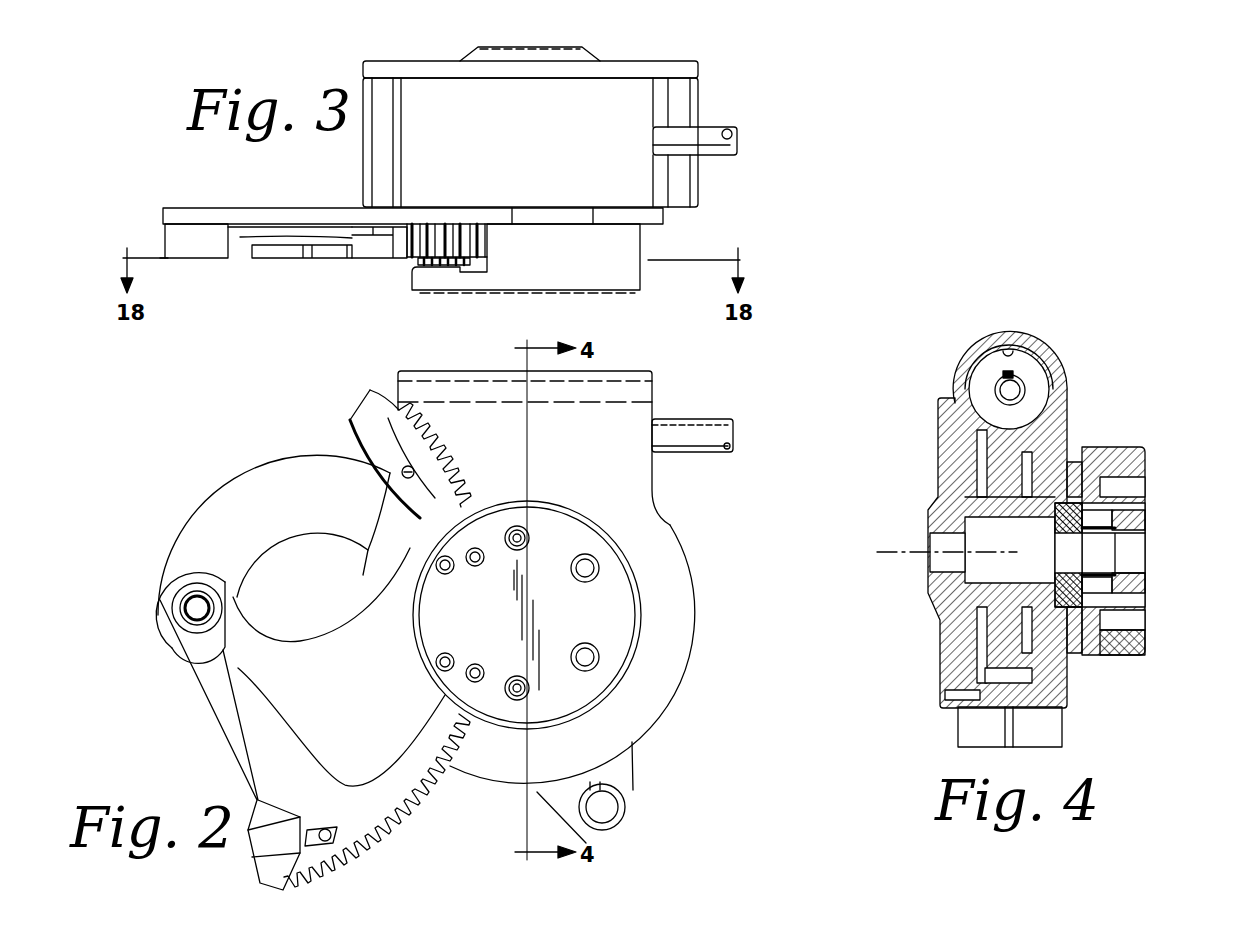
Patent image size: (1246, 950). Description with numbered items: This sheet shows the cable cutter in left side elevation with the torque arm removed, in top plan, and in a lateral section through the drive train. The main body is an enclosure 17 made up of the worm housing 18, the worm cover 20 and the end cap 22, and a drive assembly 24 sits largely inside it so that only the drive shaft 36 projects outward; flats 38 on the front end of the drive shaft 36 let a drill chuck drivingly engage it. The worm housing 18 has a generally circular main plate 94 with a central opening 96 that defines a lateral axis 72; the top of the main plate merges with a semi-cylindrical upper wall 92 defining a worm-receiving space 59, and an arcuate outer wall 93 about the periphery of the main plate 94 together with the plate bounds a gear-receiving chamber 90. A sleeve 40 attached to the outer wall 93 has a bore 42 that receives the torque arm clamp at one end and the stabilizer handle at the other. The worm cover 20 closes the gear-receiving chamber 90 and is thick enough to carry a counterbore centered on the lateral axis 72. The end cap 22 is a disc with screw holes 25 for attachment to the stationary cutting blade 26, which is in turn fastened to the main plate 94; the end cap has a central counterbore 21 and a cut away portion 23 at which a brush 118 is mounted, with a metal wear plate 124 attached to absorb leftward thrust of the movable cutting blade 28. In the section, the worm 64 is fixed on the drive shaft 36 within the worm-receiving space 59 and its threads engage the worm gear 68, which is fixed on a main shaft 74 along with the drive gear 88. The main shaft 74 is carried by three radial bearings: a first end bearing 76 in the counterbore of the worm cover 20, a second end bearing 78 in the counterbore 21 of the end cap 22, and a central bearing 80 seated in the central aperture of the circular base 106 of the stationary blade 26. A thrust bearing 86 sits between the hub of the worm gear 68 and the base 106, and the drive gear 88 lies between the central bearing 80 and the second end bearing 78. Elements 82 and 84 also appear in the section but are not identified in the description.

In FIG. 3, the enclosure 17 is at (700, 63).
In FIG. 2, the enclosure 17 is at (429, 368).
In FIG. 3, the worm housing 18 is at (638, 117).
In FIG. 2, the worm housing 18 is at (668, 650).
In FIG. 4, the worm housing 18 is at (1062, 385).
In FIG. 3, the worm cover 20 is at (640, 68).
In FIG. 4, the worm cover 20 is at (937, 403).
In FIG. 4, the central counterbore 21 is at (1147, 480).
In FIG. 3, the end cap 22 is at (637, 266).
In FIG. 2, the end cap 22 is at (620, 603).
In FIG. 4, the end cap 22 is at (1145, 455).
In FIG. 3, the cut away portion 23 is at (443, 278).
In FIG. 3, the drive assembly 24 is at (666, 207).
In FIG. 2, the drive assembly 24 is at (683, 418).
In FIG. 2, the screw holes 25 is at (530, 537).
In FIG. 3, the stationary cutting blade 26 is at (186, 206).
In FIG. 2, the stationary cutting blade 26 is at (250, 462).
In FIG. 3, the movable cutting blade 28 is at (273, 257).
In FIG. 2, the movable cutting blade 28 is at (193, 689).
In FIG. 2, the drive shaft 36 is at (733, 436).
In FIG. 3, the flats 38 is at (728, 152).
In FIG. 2, the flats 38 is at (712, 419).
In FIG. 2, the sleeve 40 is at (628, 807).
In FIG. 4, the sleeve 40 is at (955, 732).
In FIG. 2, the bore 42 is at (617, 820).
In FIG. 4, the worm-receiving space 59 is at (1003, 350).
In FIG. 4, the worm 64 is at (1025, 368).
In FIG. 4, the worm gear 68 is at (977, 460).
In FIG. 4, the lateral axis 72 is at (880, 548).
In FIG. 4, the main shaft 74 is at (940, 625).
In FIG. 4, the first end bearing 76 is at (935, 590).
In FIG. 4, the second end bearing 78 is at (1145, 605).
In FIG. 4, the central bearing 80 is at (1110, 655).
In FIG. 4, the bore 82 is at (943, 542).
In FIG. 4, the screw 84 is at (1145, 552).
In FIG. 4, the thrust bearing 86 is at (1060, 605).
In FIG. 4, the drive gear 88 is at (1125, 447).
In FIG. 4, the gear-receiving chamber 90 is at (977, 432).
In FIG. 3, the upper wall 92 is at (443, 100).
In FIG. 2, the upper wall 92 is at (638, 372).
In FIG. 4, the upper wall 92 is at (955, 392).
In FIG. 3, the outer wall 93 is at (382, 174).
In FIG. 4, the outer wall 93 is at (975, 660).
In FIG. 2, the main plate 94 is at (657, 703).
In FIG. 4, the main plate 94 is at (1067, 400).
In FIG. 4, the central opening 96 is at (1105, 500).
In FIG. 4, the circular base 106 is at (1097, 660).
In FIG. 3, the brush 118 is at (415, 266).
In FIG. 3, the wear plate 124 is at (500, 266).